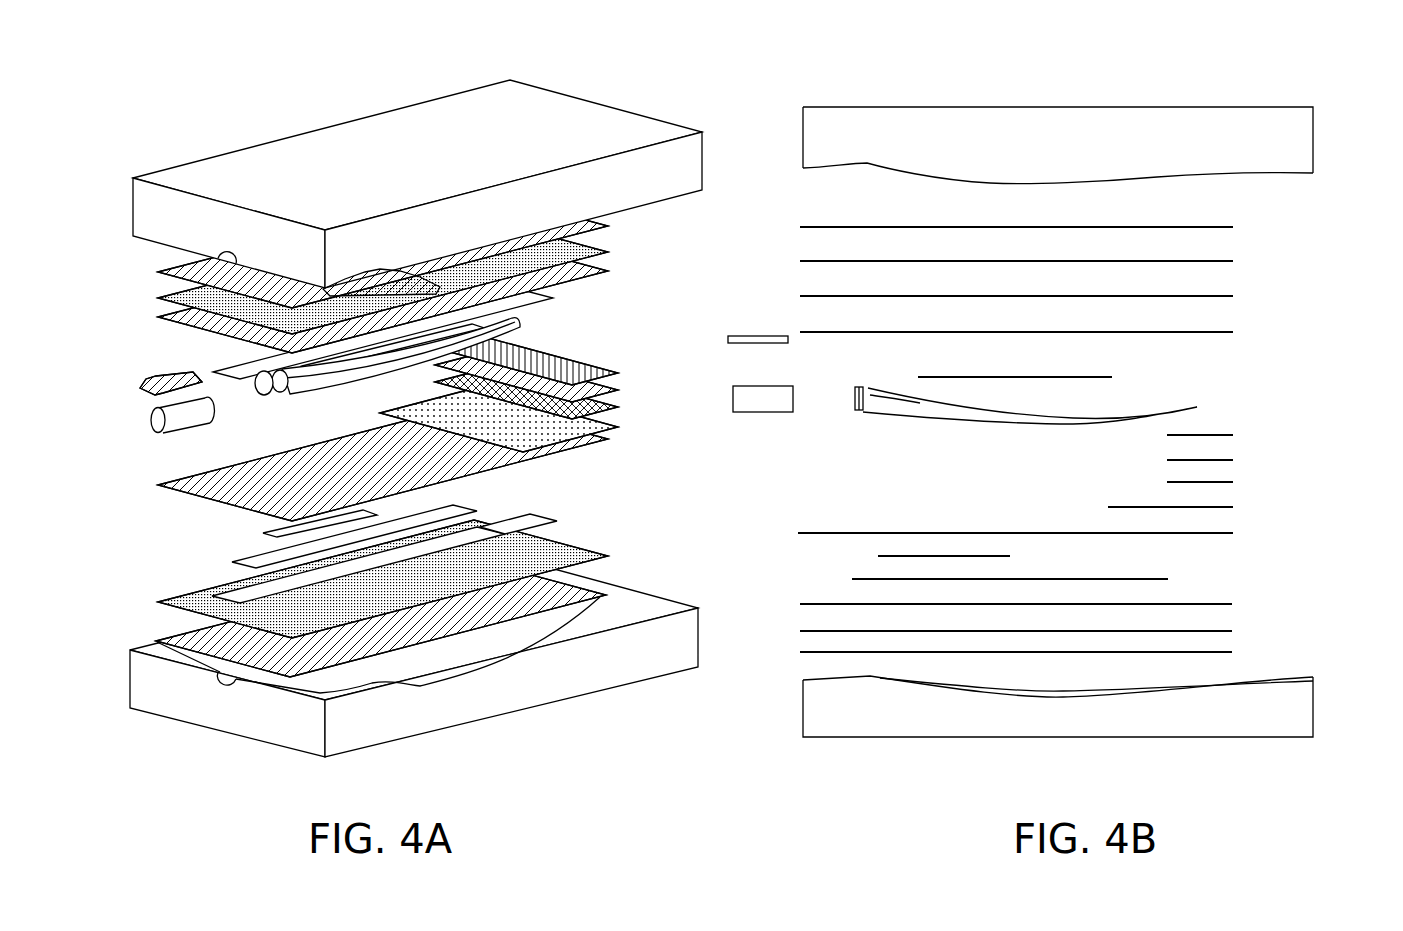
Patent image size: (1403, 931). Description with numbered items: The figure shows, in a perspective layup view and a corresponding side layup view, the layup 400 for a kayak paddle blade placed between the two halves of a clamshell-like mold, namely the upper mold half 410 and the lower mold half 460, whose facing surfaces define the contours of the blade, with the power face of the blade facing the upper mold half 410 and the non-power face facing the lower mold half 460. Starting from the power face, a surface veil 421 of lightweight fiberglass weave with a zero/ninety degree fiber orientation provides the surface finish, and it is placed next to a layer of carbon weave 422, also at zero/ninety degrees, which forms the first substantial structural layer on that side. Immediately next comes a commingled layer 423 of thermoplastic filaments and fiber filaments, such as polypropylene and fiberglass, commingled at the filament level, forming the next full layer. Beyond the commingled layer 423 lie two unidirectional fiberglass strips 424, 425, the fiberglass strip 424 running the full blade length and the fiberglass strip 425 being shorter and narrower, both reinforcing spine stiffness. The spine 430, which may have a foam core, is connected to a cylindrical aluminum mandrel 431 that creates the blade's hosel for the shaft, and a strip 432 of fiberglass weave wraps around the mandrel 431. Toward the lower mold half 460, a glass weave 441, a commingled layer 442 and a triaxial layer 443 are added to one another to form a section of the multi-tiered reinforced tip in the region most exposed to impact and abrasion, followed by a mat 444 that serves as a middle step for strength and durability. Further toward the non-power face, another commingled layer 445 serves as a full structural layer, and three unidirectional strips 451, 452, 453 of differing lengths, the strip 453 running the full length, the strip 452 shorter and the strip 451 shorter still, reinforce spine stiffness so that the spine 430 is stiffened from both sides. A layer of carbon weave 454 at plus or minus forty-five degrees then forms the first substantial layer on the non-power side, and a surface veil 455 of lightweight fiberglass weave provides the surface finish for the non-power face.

In FIG. 4B, the layup 400 is at (948, 54).
In FIG. 4A, the upper mold half 410 is at (417, 184).
In FIG. 4B, the upper mold half 410 is at (1313, 110).
In FIG. 4A, the surface veil 421 is at (383, 249).
In FIG. 4B, the surface veil 421 is at (1212, 227).
In FIG. 4A, the carbon weave 422 is at (383, 275).
In FIG. 4B, the carbon weave 422 is at (1212, 261).
In FIG. 4A, the commingled layer 423 is at (383, 294).
In FIG. 4B, the commingled layer 423 is at (1212, 296).
In FIG. 4A, the fiberglass strip 424 is at (383, 335).
In FIG. 4B, the fiberglass strip 424 is at (1212, 332).
In FIG. 4A, the fiberglass strip 425 is at (393, 347).
In FIG. 4B, the fiberglass strip 425 is at (1088, 377).
In FIG. 4A, the spine 430 is at (387, 356).
In FIG. 4B, the spine 430 is at (857, 411).
In FIG. 4A, the mandrel 431 is at (182, 415).
In FIG. 4B, the mandrel 431 is at (733, 403).
In FIG. 4A, the strip 432 is at (171, 383).
In FIG. 4B, the strip 432 is at (728, 339).
In FIG. 4A, the glass weave 441 is at (526, 360).
In FIG. 4B, the glass weave 441 is at (1213, 435).
In FIG. 4A, the commingled layer 442 is at (526, 377).
In FIG. 4B, the commingled layer 442 is at (1213, 460).
In FIG. 4A, the triaxial layer 443 is at (526, 394).
In FIG. 4B, the triaxial layer 443 is at (1213, 482).
In FIG. 4A, the mat 444 is at (499, 420).
In FIG. 4B, the mat 444 is at (1213, 507).
In FIG. 4A, the commingled layer 445 is at (383, 462).
In FIG. 4B, the commingled layer 445 is at (1213, 533).
In FIG. 4A, the strip 451 is at (410, 523).
In FIG. 4B, the strip 451 is at (978, 556).
In FIG. 4A, the strip 452 is at (354, 536).
In FIG. 4B, the strip 452 is at (1122, 579).
In FIG. 4B, the strip 453 is at (1215, 604).
In FIG. 4A, the carbon weave 454 is at (383, 579).
In FIG. 4B, the carbon weave 454 is at (1215, 631).
In FIG. 4A, the surface veil 455 is at (381, 618).
In FIG. 4B, the surface veil 455 is at (1215, 652).
In FIG. 4A, the lower mold half 460 is at (414, 656).
In FIG. 4B, the lower mold half 460 is at (1313, 708).